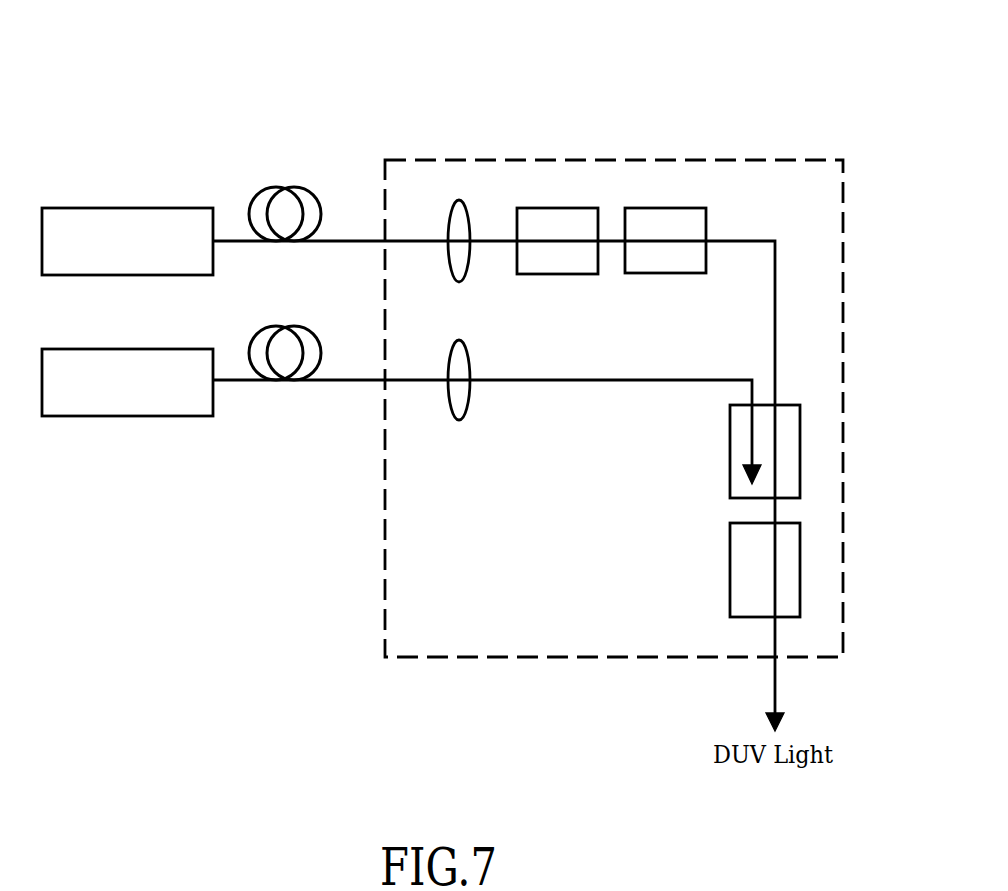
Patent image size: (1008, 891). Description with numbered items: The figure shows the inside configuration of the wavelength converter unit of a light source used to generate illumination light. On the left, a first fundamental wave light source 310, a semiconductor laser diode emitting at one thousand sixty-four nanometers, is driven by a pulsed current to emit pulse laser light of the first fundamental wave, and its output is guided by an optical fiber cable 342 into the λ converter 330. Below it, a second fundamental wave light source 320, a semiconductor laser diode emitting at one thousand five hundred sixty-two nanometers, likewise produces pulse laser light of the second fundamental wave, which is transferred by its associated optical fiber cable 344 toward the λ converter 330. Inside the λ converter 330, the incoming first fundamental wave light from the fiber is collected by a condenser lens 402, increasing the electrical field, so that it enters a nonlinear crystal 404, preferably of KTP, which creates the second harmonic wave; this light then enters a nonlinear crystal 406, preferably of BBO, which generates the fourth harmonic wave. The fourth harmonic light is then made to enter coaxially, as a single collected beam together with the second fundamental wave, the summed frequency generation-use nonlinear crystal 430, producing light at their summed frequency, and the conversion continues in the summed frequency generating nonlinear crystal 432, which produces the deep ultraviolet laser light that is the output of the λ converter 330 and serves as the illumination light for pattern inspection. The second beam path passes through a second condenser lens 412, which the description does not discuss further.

The first fundamental wave light source 310 is at (94, 208).
The second fundamental wave light source 320 is at (94, 349).
The optical fiber cable 342 is at (276, 187).
The optical fiber cable 344 is at (274, 327).
The condenser lens 402 is at (459, 200).
The condenser lens 412 is at (458, 424).
The nonlinear crystal 404 is at (530, 208).
The nonlinear crystal 406 is at (697, 208).
The summed frequency generation-use nonlinear crystal 430 is at (730, 418).
The summed frequency generating nonlinear crystal 432 is at (730, 540).
The λ converter 330 is at (507, 658).